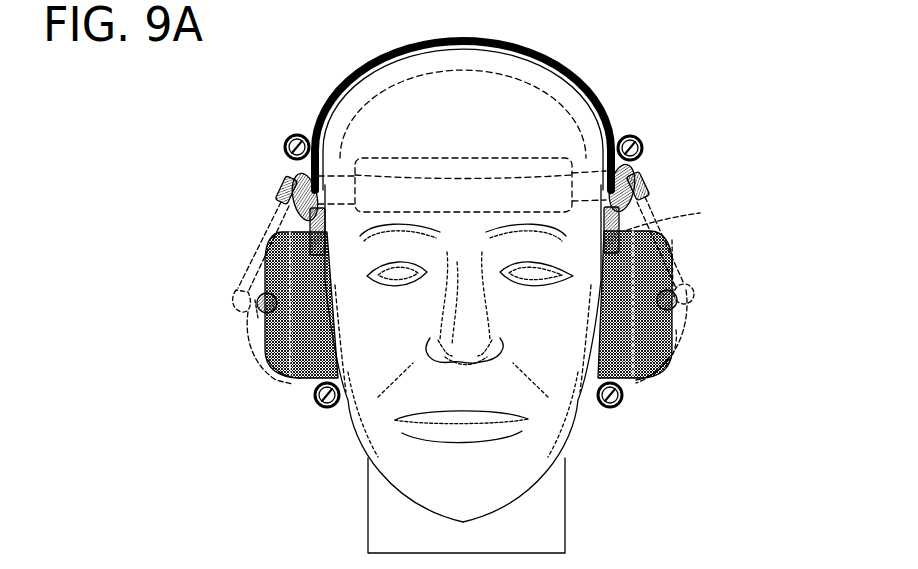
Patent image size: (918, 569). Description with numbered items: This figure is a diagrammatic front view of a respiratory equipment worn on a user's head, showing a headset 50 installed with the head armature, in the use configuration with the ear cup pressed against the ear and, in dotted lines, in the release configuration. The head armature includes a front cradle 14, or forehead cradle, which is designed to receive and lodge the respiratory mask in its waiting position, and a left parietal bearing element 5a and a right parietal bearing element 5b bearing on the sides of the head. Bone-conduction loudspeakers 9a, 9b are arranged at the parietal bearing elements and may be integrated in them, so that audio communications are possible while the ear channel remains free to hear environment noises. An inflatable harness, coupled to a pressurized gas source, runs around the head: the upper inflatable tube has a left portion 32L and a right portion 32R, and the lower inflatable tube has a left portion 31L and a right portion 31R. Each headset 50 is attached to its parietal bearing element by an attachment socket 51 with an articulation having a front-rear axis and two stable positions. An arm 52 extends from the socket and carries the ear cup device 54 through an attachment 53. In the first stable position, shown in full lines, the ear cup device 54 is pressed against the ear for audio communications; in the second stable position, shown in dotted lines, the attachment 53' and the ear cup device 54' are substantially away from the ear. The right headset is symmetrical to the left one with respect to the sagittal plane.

The front cradle 14 is at (455, 205).
The bone-conduction loudspeaker 9a is at (606, 218).
The bone-conduction loudspeaker 9b is at (325, 222).
The left parietal bearing element 5a is at (630, 177).
The right parietal bearing element 5b is at (300, 180).
The right portion of upper inflatable tube 32R is at (287, 143).
The left portion of upper inflatable tube 32L is at (641, 140).
The right portion of lower inflatable tube 31R is at (318, 404).
The left portion of lower inflatable tube 31L is at (622, 398).
The attachment socket 51 is at (280, 188).
The arm 52 is at (270, 230).
The headset 50 is at (318, 340).
The attachment 53 is at (477, 319).
The attachment 53' is at (726, 283).
The ear cup device 54 is at (481, 381).
The ear cup device 54' is at (712, 347).